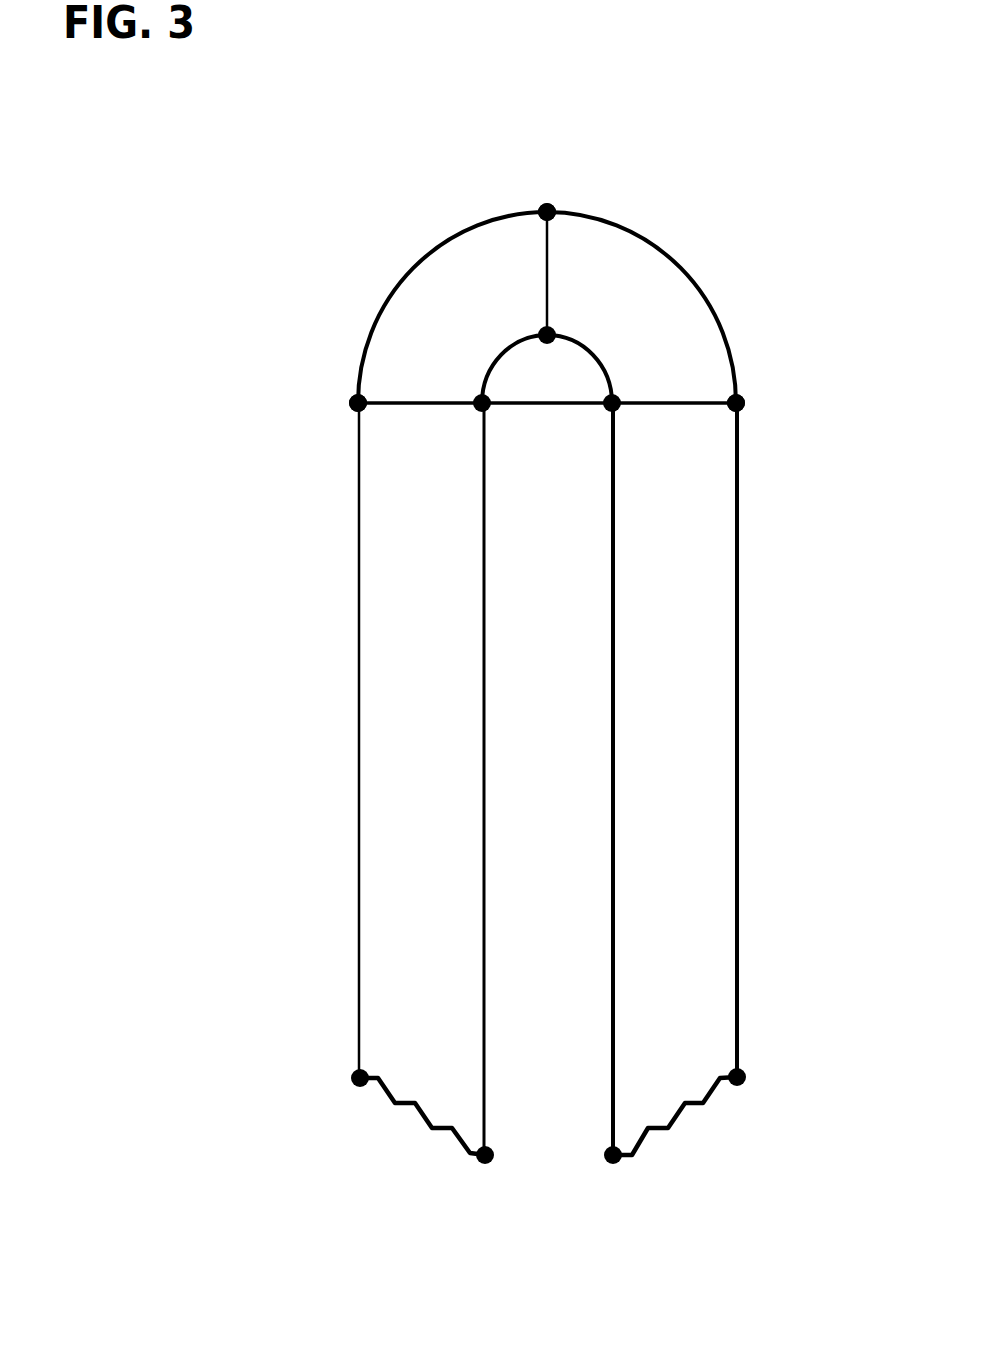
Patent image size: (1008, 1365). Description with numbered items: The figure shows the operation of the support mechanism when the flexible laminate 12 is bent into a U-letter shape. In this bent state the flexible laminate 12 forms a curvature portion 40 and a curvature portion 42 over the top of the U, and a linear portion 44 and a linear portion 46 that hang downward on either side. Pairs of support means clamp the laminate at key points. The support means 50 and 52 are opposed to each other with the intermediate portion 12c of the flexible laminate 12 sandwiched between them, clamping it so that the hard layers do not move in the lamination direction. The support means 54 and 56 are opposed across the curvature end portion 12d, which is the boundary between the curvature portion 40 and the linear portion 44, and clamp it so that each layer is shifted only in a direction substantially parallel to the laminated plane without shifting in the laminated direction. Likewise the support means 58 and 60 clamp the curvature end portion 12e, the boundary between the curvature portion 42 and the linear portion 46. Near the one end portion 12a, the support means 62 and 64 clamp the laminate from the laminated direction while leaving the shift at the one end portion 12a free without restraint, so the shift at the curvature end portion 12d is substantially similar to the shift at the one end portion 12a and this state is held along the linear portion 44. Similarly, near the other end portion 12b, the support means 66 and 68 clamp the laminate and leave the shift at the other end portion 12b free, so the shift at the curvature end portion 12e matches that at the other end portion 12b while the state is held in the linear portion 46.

The flexible laminate 12 is at (546, 680).
The one end portion 12a is at (422, 1166).
The other end portion 12b is at (698, 1154).
The intermediate portion 12c is at (541, 198).
The curvature end portion on one side 12d is at (344, 401).
The curvature end portion on the other side 12e is at (749, 400).
The curvature portion 40 is at (442, 283).
The curvature portion 42 is at (663, 292).
The linear portion 44 is at (458, 762).
The linear portion 46 is at (695, 762).
The support means 50 is at (553, 203).
The support means 52 is at (546, 343).
The support means 54 is at (345, 395).
The support means 56 is at (490, 410).
The support means 58 is at (745, 398).
The support means 60 is at (603, 410).
The support means 62 is at (360, 1086).
The support means 64 is at (495, 1155).
The support means 66 is at (745, 1073).
The support means 68 is at (613, 1165).